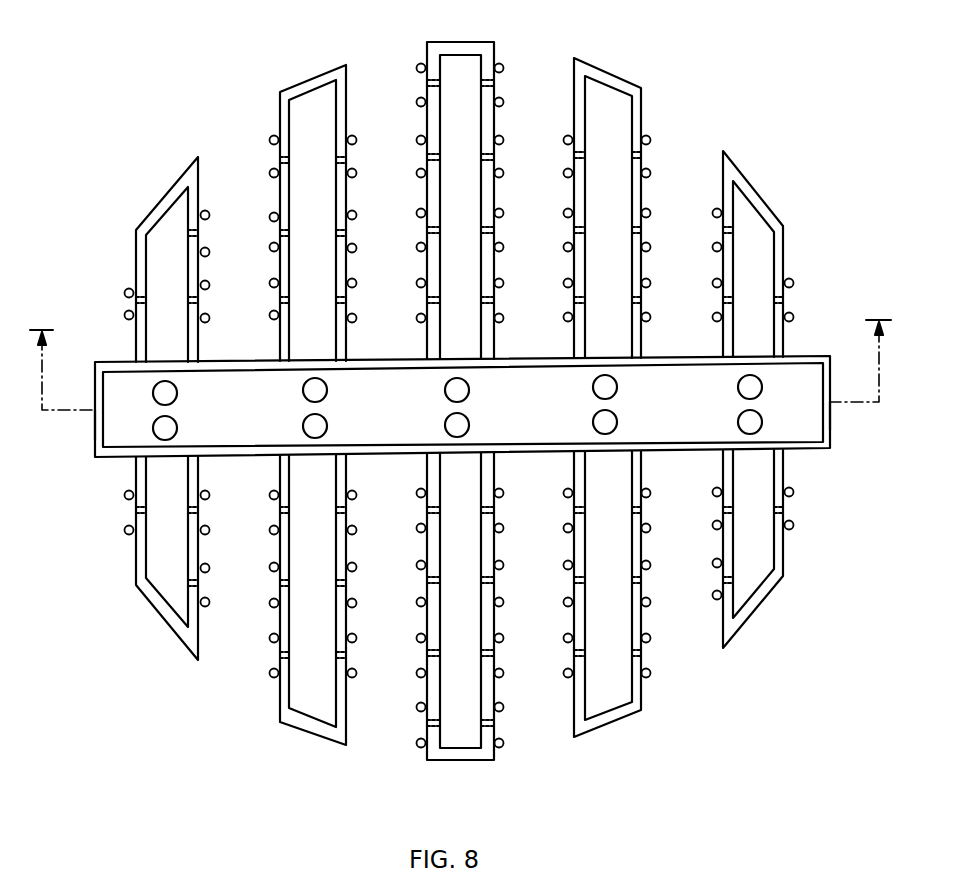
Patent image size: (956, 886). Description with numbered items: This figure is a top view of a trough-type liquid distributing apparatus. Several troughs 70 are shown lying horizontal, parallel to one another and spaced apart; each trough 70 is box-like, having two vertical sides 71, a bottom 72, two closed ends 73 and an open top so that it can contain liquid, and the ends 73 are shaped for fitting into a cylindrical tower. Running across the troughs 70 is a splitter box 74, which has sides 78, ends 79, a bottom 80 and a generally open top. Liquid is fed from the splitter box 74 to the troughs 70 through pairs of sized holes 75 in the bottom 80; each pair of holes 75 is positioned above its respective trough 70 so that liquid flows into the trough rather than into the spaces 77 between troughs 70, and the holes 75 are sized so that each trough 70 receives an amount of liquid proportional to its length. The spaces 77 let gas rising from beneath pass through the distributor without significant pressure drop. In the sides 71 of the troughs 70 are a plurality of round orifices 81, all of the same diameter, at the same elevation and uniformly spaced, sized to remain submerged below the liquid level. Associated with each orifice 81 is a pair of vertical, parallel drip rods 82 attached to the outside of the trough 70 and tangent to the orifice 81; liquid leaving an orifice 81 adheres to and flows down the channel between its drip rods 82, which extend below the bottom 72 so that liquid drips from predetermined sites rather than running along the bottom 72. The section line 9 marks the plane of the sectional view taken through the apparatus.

The section line 9- 9 is at (460, 348).
The trough 70 is at (155, 180).
The vertical side 71 is at (567, 257).
The bottom 72 is at (172, 567).
The closed end 73 is at (182, 174).
The splitter box 74 is at (837, 318).
The sized hole 75 is at (444, 388).
The space 77 is at (685, 647).
The side 78 is at (640, 440).
The end 79 is at (95, 422).
The bottom 80 is at (513, 383).
The round orifice 81 is at (645, 152).
The drip rod 82 is at (270, 138).